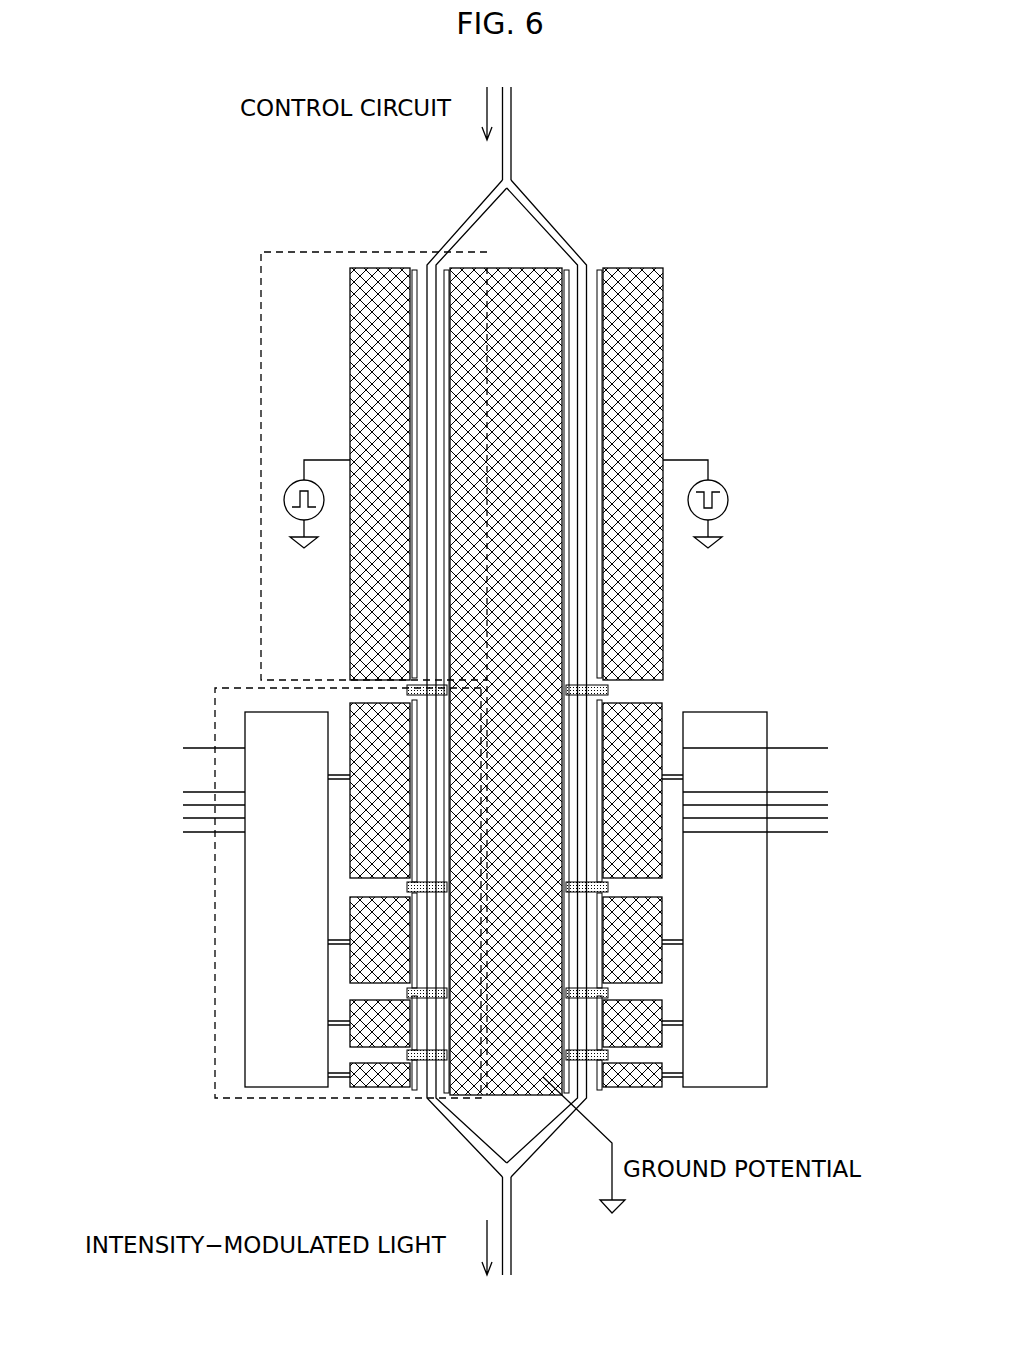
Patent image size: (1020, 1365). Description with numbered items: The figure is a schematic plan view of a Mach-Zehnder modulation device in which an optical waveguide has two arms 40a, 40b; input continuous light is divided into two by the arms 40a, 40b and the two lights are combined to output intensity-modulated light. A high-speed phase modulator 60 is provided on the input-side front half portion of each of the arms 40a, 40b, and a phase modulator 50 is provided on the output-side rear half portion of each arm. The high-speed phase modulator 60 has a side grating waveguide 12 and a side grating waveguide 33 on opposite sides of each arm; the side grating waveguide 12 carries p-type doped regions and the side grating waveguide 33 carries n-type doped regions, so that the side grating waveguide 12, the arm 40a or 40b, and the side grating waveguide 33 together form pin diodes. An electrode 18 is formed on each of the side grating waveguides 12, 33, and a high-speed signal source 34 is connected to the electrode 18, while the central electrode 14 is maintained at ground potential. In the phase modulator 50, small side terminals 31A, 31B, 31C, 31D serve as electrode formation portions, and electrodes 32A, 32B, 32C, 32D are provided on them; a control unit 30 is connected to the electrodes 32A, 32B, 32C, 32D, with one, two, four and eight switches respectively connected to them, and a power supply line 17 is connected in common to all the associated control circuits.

The side grating waveguide 12 is at (447, 355).
The electrode 14 is at (525, 598).
The power supply line 17 is at (183, 748).
The electrode 18 is at (355, 287).
The control unit 30 is at (243, 905).
The small side terminal 31A is at (413, 1092).
The small side terminal 31B is at (413, 1023).
The small side terminal 31C is at (413, 951).
The small side terminal 31D is at (413, 858).
The electrode 32A is at (370, 1083).
The electrode 32B is at (363, 1033).
The electrode 32C is at (363, 957).
The electrode 32D is at (363, 845).
The side grating waveguide 33 is at (405, 405).
The pulse signal source 34 is at (284, 500).
The arm 40a is at (470, 222).
The arm 40b is at (547, 222).
The phase modulator 50 is at (213, 1000).
The high-speed phase modulator 60 is at (261, 582).